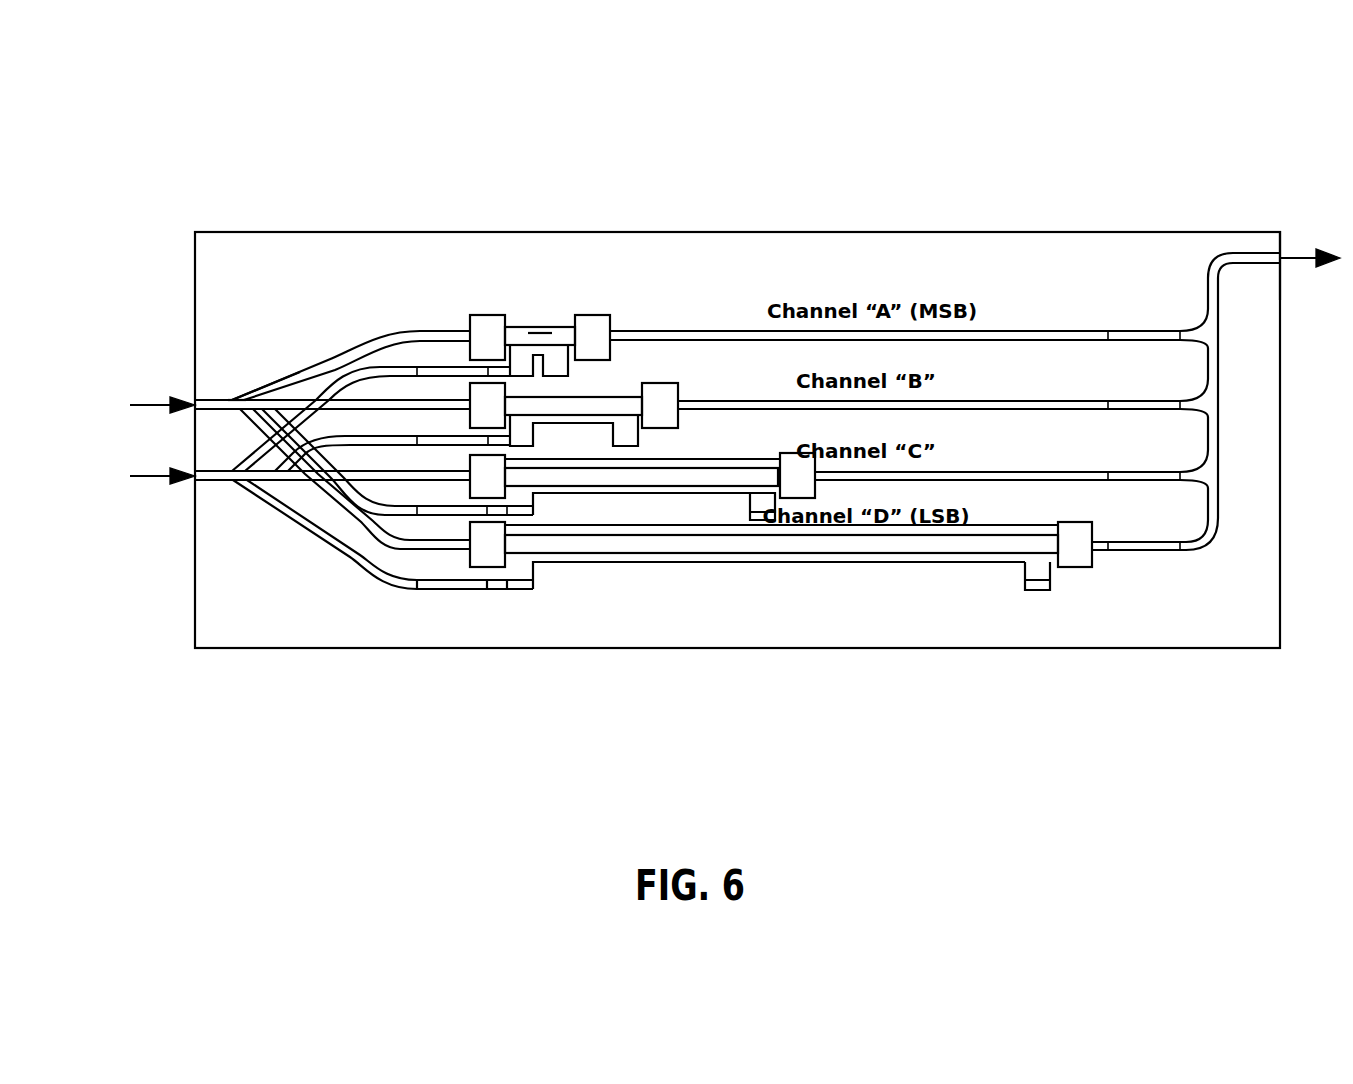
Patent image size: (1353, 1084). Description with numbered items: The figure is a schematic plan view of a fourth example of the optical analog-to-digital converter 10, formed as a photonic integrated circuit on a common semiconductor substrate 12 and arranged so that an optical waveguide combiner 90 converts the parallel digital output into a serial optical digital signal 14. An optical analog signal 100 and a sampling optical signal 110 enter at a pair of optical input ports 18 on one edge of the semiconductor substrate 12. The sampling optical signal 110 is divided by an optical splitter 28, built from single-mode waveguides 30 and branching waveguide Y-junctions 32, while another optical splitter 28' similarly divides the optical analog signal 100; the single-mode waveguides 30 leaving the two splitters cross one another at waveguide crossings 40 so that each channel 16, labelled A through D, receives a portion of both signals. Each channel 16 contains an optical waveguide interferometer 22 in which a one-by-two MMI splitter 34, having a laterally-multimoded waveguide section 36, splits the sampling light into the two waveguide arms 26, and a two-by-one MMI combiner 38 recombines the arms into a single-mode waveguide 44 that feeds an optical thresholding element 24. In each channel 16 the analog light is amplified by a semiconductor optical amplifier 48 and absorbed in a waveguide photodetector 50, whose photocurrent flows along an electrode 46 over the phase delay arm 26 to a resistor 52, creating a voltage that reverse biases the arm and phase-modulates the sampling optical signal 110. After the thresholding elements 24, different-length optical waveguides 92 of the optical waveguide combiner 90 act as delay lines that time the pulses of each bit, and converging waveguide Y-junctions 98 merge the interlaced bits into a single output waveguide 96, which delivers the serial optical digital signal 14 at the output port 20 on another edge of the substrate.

The optical analog-to-digital converter 10 is at (1045, 674).
The semiconductor substrate 12 is at (229, 618).
The optical digital signal 14 is at (1293, 242).
The channel 16 is at (781, 320).
The optical input ports 18 is at (192, 413).
The output port 20 is at (1277, 266).
The optical waveguide interferometer 22 is at (466, 292).
The optical thresholding element 24 is at (1137, 331).
The waveguide arm 26 is at (553, 321).
The optical splitter 28 is at (266, 367).
The optical splitter 28' is at (373, 534).
The single-mode waveguides 30 is at (297, 366).
The branching waveguide Y-junction 32 is at (225, 398).
The 1×2 MMI splitter 34 is at (463, 313).
The laterally-multimoded waveguide section 36 is at (476, 350).
The 2×1 MMI combiner 38 is at (622, 314).
The waveguide crossing 40 is at (252, 436).
The single-mode waveguide 44 is at (686, 330).
The electrode 46 is at (662, 558).
The semiconductor optical amplifier 48 is at (455, 592).
The waveguide photodetector 50 is at (520, 592).
The resistor 52 is at (1040, 592).
The optical waveguide combiner 90 is at (1218, 538).
The optical waveguides 92 is at (1218, 489).
The output waveguide 96 is at (1208, 268).
The converging waveguide Y-junction 98 is at (1212, 388).
The optical analog signal 100 is at (152, 481).
The sampling optical signal 110 is at (153, 399).